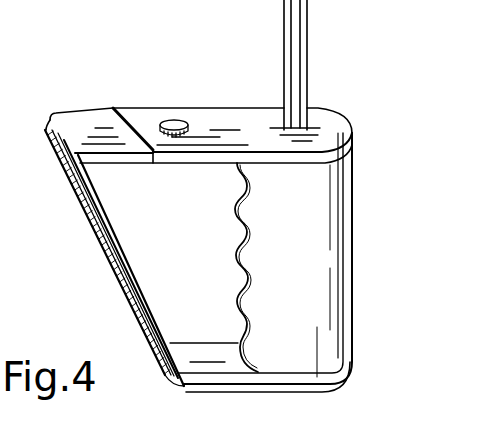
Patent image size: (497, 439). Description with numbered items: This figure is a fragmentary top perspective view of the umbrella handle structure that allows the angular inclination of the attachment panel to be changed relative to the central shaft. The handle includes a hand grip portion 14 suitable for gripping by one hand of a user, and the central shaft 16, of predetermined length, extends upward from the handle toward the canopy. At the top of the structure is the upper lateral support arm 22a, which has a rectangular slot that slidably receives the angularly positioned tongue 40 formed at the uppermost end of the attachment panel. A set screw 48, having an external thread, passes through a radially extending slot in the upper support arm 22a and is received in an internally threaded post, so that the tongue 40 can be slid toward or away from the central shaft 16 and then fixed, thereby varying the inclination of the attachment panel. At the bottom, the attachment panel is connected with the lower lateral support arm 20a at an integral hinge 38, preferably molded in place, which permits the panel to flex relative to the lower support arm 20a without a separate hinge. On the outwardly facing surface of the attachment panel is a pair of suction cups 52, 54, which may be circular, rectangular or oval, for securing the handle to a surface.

The hand grip portion 14 is at (323, 170).
The central shaft 16 is at (283, 15).
The lower lateral support arm 20a is at (230, 389).
The upper lateral support arm 22a is at (228, 115).
The integral hinge 38 is at (176, 388).
The tongue 40 is at (88, 113).
The set screw 48 is at (163, 118).
The suction cup 52 is at (88, 228).
The suction cup 54 is at (128, 318).